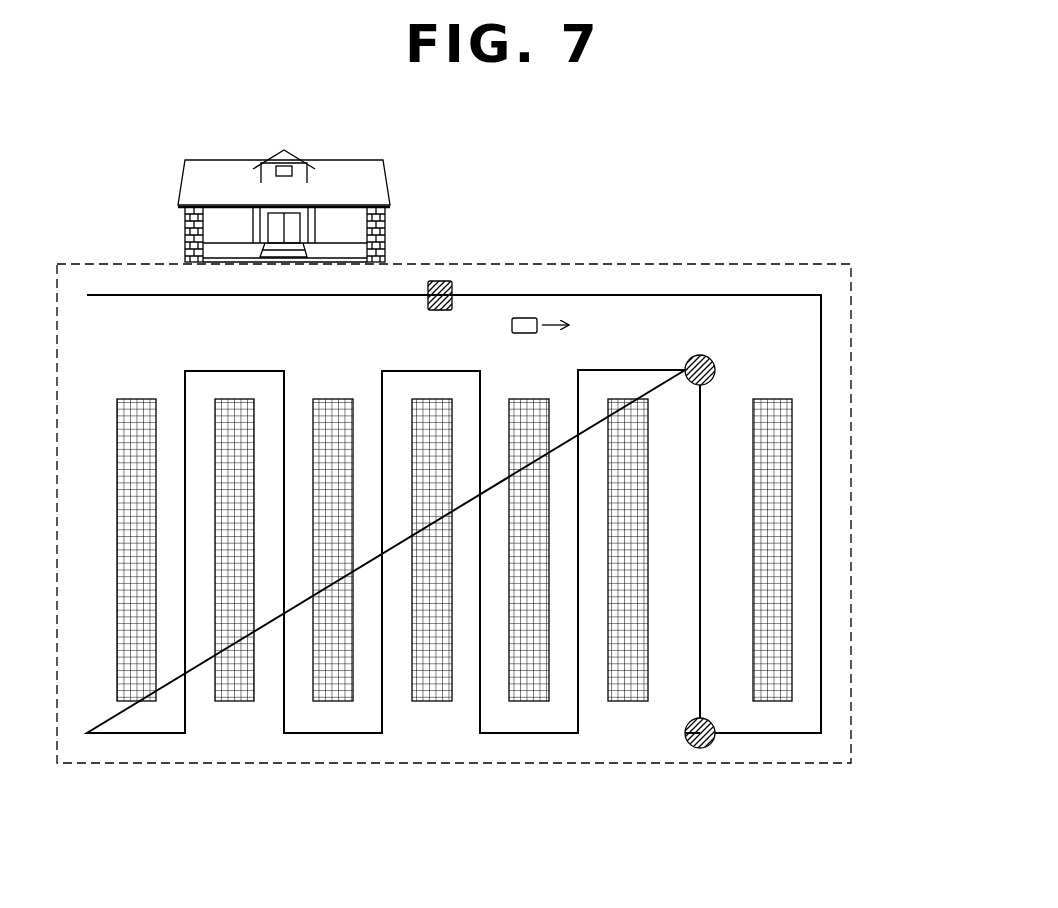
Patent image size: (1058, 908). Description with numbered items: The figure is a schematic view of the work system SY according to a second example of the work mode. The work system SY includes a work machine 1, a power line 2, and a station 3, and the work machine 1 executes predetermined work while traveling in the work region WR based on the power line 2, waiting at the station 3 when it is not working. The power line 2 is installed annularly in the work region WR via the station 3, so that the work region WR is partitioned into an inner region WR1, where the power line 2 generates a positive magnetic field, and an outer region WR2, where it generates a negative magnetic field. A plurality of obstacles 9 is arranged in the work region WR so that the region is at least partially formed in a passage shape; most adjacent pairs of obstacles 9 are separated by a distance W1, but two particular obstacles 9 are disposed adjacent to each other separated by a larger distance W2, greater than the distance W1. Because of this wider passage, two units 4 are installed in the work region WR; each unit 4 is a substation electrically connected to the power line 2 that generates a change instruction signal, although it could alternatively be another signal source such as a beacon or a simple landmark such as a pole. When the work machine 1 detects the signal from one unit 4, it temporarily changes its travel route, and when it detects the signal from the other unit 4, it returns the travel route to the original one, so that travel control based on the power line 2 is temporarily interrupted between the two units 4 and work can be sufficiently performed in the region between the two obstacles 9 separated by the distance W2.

The work machine 1 is at (527, 318).
The power line 2 is at (791, 295).
The station 3 is at (440, 282).
The unit 4 is at (707, 357).
The obstacle 9 is at (793, 533).
The work system SY is at (83, 234).
The work region WR is at (628, 264).
The inner region WR1 is at (770, 342).
The outer region WR2 is at (838, 396).
The distance W1 is at (58, 820).
The distance W2 is at (649, 853).